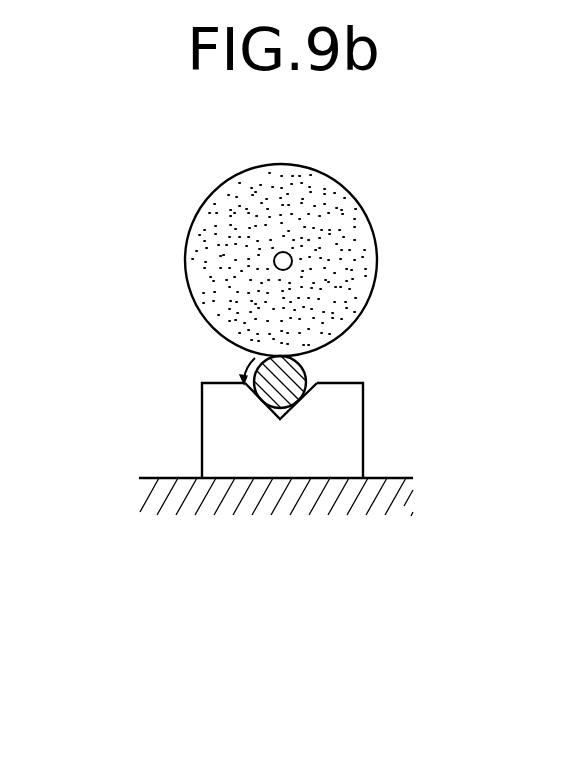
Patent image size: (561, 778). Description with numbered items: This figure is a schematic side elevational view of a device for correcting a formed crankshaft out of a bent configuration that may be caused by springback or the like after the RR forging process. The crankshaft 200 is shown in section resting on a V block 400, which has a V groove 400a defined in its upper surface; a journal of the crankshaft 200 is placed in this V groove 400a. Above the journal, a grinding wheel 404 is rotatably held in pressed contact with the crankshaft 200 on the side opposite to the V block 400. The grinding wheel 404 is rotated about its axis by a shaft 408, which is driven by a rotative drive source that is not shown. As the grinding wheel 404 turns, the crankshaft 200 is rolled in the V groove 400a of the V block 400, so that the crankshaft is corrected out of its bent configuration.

The grinding wheel 404 is at (352, 217).
The shaft 408 is at (292, 262).
The crankshaft 200 is at (293, 371).
The V groove 400a is at (287, 413).
The V block 400 is at (272, 468).